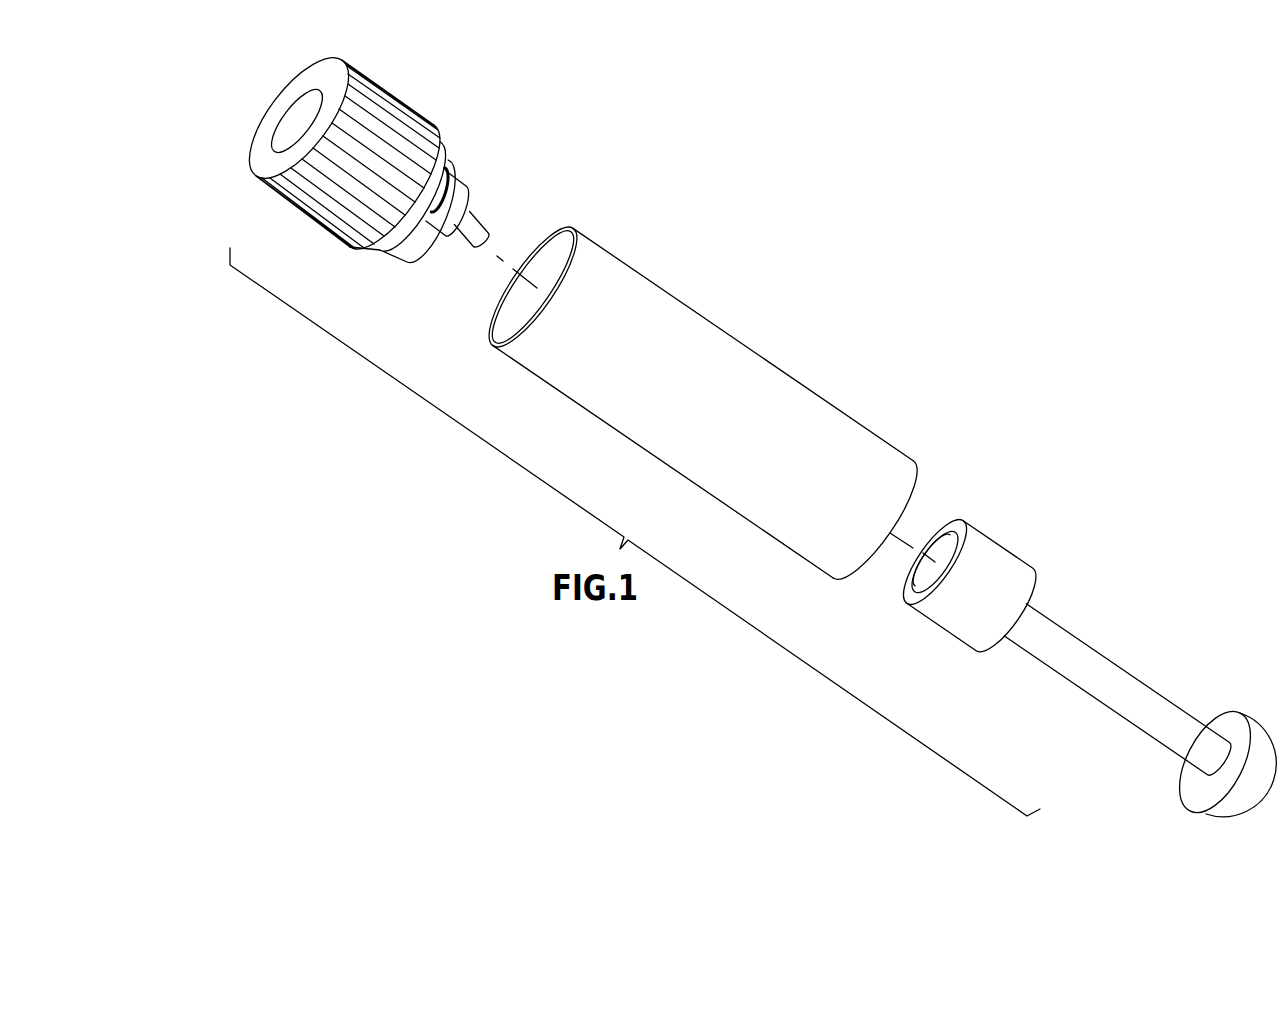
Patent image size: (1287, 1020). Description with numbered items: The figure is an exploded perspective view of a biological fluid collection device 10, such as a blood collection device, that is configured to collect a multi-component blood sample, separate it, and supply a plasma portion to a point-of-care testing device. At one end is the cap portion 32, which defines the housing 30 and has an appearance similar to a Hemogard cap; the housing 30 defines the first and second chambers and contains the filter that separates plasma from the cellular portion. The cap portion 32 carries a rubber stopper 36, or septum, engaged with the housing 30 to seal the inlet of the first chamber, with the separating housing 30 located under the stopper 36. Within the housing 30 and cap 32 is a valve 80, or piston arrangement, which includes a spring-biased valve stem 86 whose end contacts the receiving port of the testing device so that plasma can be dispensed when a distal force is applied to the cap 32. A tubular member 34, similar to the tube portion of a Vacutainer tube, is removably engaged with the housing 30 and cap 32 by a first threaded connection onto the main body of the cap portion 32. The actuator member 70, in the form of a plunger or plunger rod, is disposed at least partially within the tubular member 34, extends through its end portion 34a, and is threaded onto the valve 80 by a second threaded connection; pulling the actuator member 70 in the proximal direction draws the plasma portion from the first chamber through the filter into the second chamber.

The biological fluid collection device 10 is at (677, 120).
The housing 30 is at (338, 218).
The cap portion 32 is at (419, 92).
The rubber stopper 36 is at (300, 114).
The valve 80 is at (465, 215).
The valve stem 86 is at (480, 239).
The tubular member 34 is at (707, 348).
The end portion 34a is at (913, 488).
The actuator member 70 is at (1238, 715).